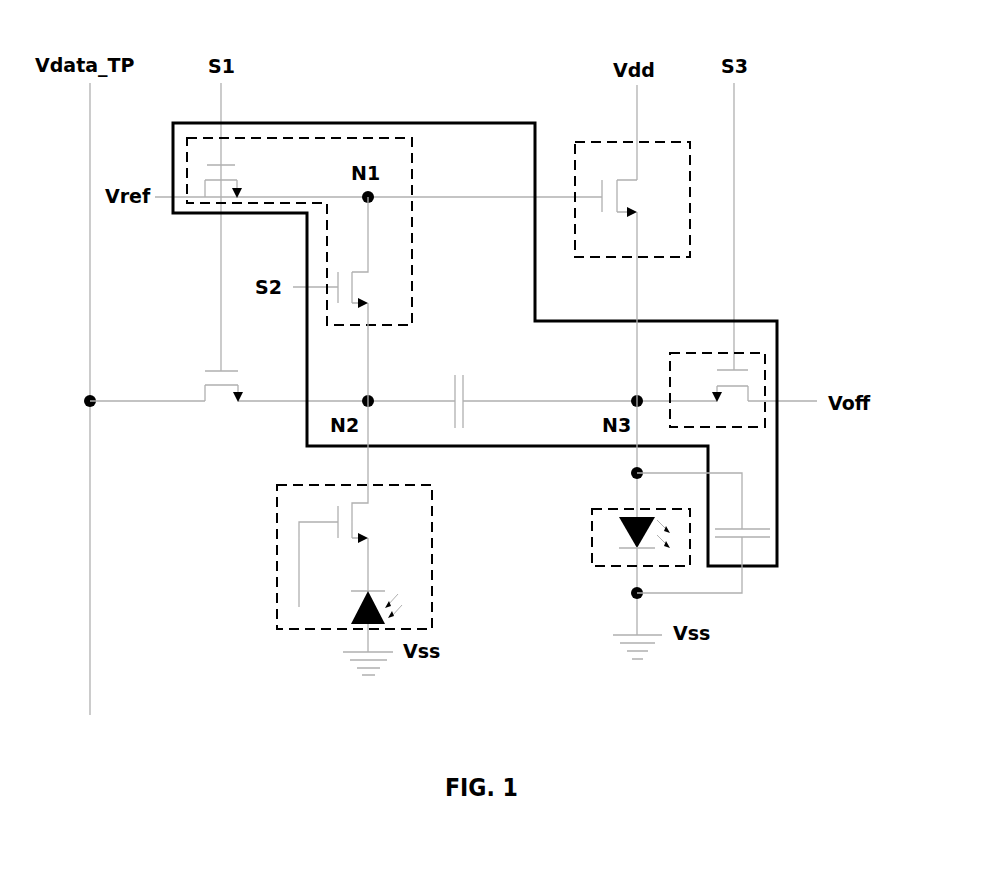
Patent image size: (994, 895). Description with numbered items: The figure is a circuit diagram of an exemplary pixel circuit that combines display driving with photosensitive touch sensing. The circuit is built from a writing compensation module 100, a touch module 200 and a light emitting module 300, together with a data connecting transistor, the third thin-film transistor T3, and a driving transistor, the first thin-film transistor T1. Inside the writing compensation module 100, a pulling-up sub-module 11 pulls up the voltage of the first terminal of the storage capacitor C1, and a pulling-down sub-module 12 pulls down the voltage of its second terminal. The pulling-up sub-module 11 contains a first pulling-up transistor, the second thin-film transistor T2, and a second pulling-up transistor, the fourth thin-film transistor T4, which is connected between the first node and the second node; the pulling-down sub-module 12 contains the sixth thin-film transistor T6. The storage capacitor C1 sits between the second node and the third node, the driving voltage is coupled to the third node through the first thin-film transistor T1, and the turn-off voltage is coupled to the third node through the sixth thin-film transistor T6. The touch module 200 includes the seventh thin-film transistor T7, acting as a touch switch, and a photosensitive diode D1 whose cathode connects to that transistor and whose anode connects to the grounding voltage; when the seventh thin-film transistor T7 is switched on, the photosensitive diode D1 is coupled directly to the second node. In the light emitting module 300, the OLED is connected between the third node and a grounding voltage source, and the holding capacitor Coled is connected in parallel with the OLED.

The writing compensation module 100 is at (461, 123).
The pulling-up sub-module 11 is at (299, 209).
The pulling-down sub-module 12 is at (791, 366).
The touch module 200 is at (292, 517).
The light emitting module 300 is at (595, 552).
The first thin-film transistor T1 is at (632, 271).
The second thin-film transistor T2 is at (231, 169).
The third thin-film transistor T3 is at (224, 401).
The fourth thin-film transistor T4 is at (370, 299).
The sixth thin-film transistor T6 is at (765, 365).
The seventh thin-film transistor T7 is at (351, 504).
The storage capacitor C1 is at (456, 417).
The holding capacitor Coled is at (739, 533).
The photosensitive diode D1 is at (391, 599).
The light-emitting diode OLED is at (603, 555).